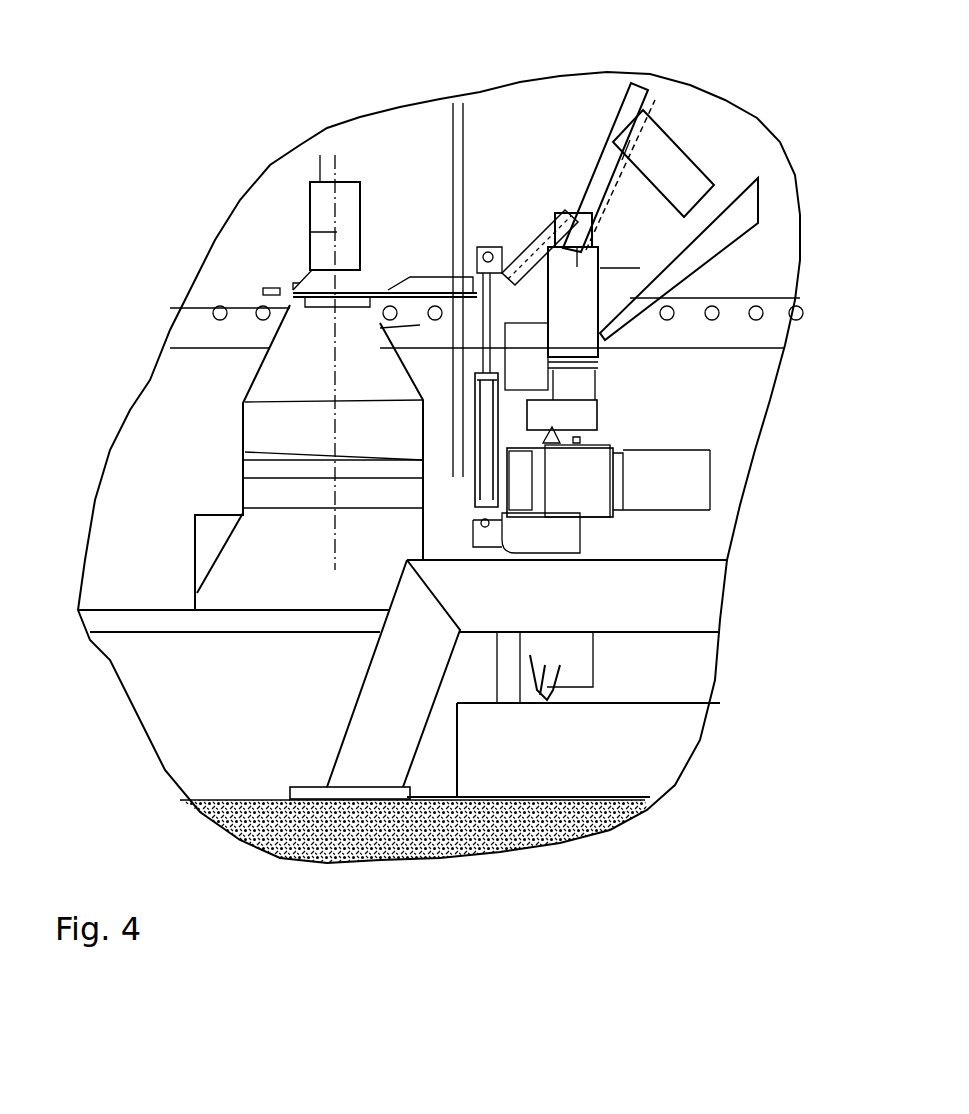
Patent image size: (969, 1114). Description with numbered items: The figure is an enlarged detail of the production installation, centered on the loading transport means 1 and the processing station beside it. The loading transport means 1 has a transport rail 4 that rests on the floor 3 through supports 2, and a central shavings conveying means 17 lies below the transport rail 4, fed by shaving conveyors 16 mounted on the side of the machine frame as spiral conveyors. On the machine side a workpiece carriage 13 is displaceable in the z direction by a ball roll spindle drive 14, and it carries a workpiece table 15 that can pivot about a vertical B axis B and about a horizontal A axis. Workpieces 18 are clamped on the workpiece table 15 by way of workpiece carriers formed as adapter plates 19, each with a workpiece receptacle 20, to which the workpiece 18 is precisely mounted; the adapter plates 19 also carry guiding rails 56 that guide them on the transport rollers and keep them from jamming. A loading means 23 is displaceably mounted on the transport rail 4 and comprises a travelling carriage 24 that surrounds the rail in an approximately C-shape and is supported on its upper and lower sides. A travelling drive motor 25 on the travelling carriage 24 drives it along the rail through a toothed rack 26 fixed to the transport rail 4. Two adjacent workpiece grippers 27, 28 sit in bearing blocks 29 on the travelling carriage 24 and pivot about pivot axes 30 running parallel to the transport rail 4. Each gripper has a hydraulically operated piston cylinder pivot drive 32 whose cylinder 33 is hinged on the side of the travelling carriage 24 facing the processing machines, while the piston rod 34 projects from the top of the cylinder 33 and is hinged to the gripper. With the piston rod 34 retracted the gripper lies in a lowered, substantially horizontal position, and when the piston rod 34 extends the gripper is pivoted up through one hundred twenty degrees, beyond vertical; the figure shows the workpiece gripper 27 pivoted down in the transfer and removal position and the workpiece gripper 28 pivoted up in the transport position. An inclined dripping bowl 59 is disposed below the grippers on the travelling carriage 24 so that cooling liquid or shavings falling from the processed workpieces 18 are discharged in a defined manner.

The loading transport means 1 is at (607, 384).
The supports 2 is at (698, 598).
The floor 3 is at (367, 863).
The transport rail 4 is at (600, 482).
The workpiece carriage 13 is at (253, 466).
The ball roll spindle drive 14 is at (593, 657).
The workpiece table 15 is at (293, 297).
The shaving conveyors 16 is at (593, 670).
The central shavings conveying means 17 is at (690, 735).
The workpiece 18 is at (310, 247).
The adapter plate 19 is at (295, 283).
The workpiece receptacle 20 is at (392, 272).
The loading means 23 is at (525, 232).
The travelling carriage 24 is at (600, 422).
The travelling drive motor 25 is at (578, 262).
The toothed rack 26 is at (600, 440).
The workpiece gripper 27 is at (412, 266).
The workpiece gripper 28 is at (595, 126).
The bearing blocks 29 is at (640, 268).
The pivot axes 30 is at (600, 328).
The piston cylinder pivot drive 32 is at (245, 402).
The cylinder 33 is at (245, 452).
The piston rod 34 is at (380, 328).
The guiding rails 56 is at (263, 291).
The inclined dripping bowl 59 is at (740, 213).
The B axis B is at (310, 232).